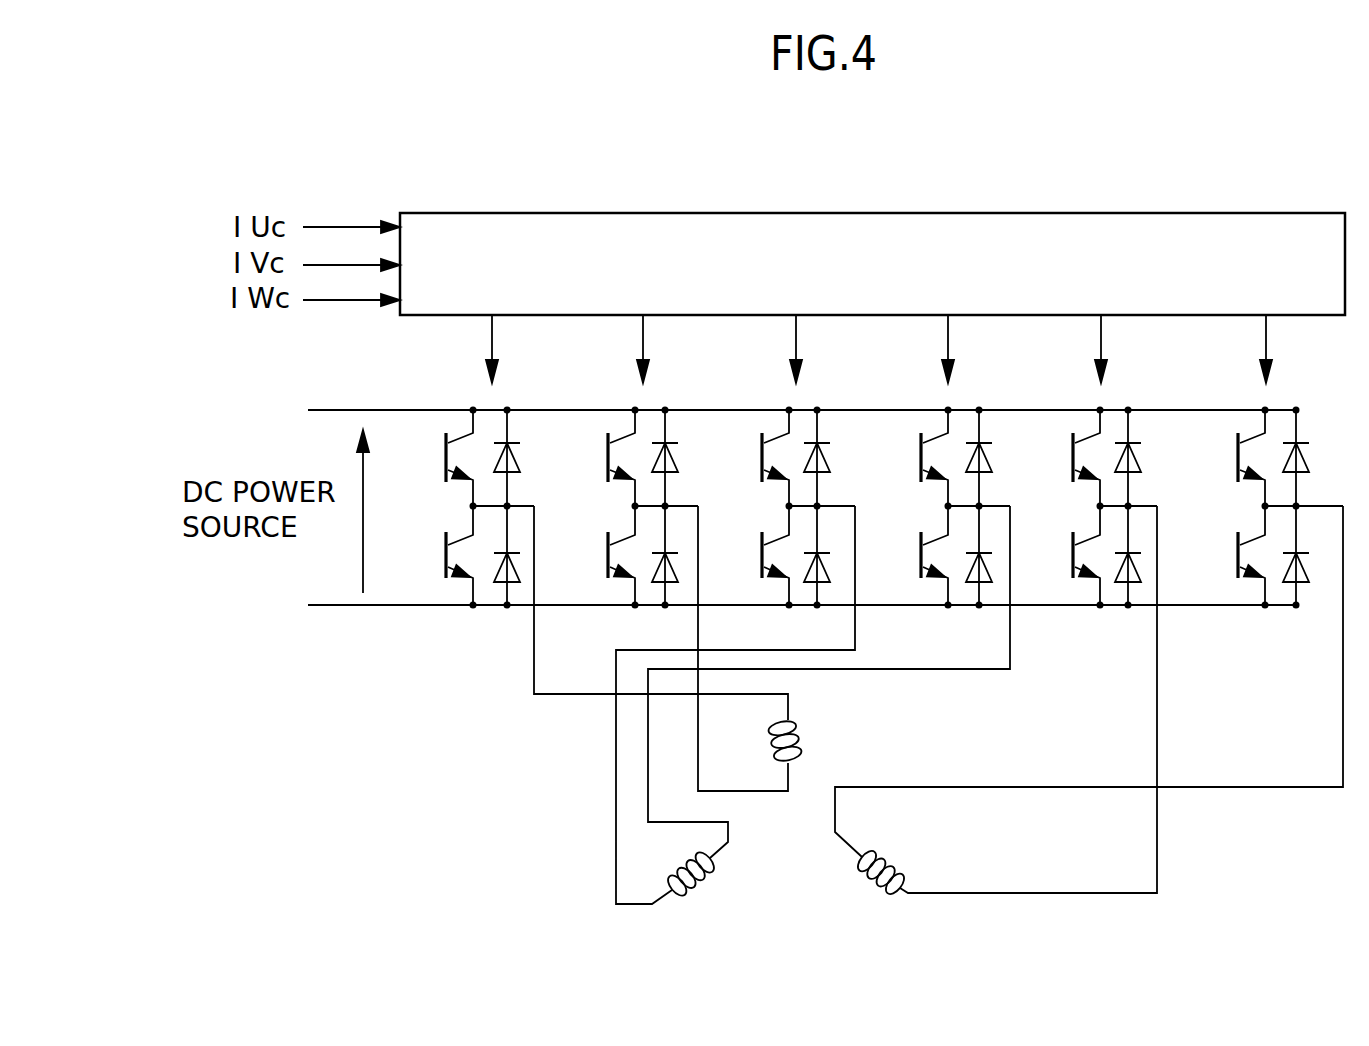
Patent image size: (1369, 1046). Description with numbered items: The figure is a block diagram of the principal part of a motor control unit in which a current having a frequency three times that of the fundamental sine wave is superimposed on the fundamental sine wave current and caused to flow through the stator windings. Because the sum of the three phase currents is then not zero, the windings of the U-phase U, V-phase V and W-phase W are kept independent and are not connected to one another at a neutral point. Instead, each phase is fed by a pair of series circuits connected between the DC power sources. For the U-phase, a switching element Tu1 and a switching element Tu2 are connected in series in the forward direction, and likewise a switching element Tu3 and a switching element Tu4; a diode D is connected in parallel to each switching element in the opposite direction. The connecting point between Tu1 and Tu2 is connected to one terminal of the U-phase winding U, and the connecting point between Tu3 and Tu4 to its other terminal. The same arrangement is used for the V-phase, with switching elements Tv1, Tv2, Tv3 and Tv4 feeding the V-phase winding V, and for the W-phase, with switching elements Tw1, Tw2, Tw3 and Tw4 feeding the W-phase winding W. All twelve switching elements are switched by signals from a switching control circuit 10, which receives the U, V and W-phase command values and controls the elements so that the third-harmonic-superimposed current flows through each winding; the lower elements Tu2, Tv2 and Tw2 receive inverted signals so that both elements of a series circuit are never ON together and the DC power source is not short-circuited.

The switching control circuit 10 is at (1154, 213).
The switching element Tu1 is at (427, 458).
The switching element Tu2 is at (427, 555).
The switching element Tu3 is at (592, 458).
The switching element Tu4 is at (592, 555).
The switching element Tv1 is at (745, 458).
The switching element Tv2 is at (745, 555).
The switching element Tv3 is at (905, 458).
The switching element Tv4 is at (905, 555).
The switching element Tw1 is at (1057, 458).
The switching element Tw2 is at (1057, 555).
The switching element Tw3 is at (1218, 458).
The switching element Tw4 is at (1218, 555).
The diode D is at (920, 507).
The U-phase winding U is at (685, 648).
The V-phase winding V is at (813, 709).
The W-phase winding W is at (1086, 714).